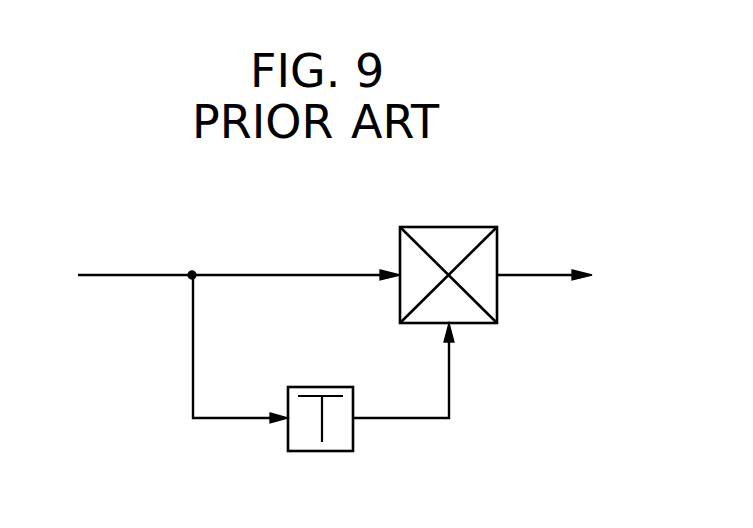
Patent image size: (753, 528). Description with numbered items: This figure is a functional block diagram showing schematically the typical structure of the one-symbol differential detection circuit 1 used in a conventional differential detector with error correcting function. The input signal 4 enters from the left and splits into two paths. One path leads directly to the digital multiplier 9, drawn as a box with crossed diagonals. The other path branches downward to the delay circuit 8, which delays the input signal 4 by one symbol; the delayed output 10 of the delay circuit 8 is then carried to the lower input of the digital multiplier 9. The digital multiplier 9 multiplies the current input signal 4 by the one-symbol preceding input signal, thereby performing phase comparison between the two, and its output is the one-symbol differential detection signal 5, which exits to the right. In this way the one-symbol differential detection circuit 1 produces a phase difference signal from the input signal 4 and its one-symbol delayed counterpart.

The one-symbol differential detection circuit 1 is at (117, 392).
The input signal 4 is at (148, 275).
The one-symbol differential detection signal 5 is at (547, 275).
The delay circuit 8 is at (323, 387).
The digital multiplier 9 is at (450, 227).
The bypass line 10 is at (400, 420).